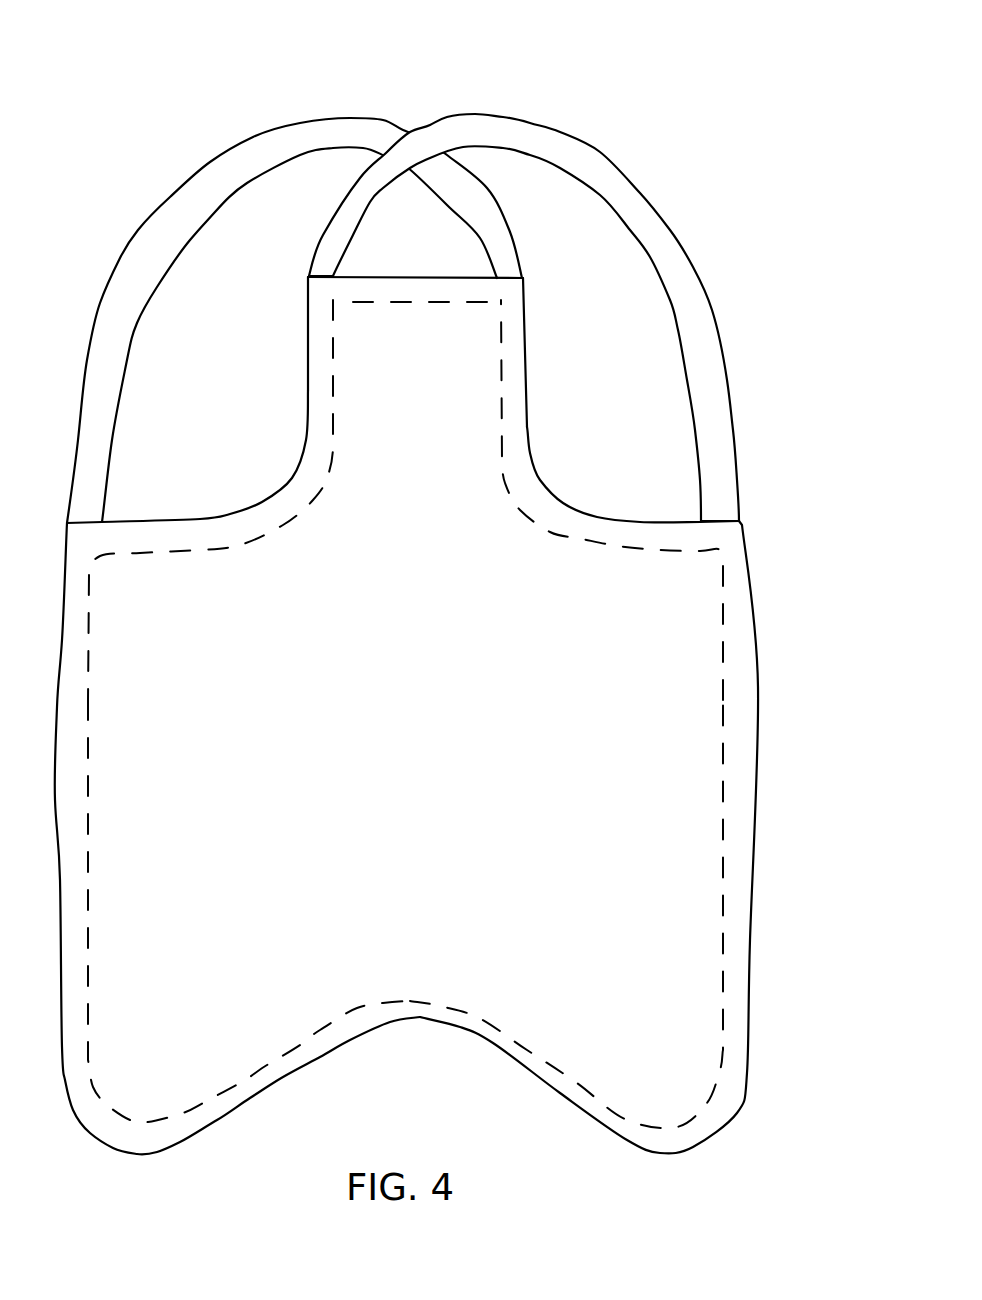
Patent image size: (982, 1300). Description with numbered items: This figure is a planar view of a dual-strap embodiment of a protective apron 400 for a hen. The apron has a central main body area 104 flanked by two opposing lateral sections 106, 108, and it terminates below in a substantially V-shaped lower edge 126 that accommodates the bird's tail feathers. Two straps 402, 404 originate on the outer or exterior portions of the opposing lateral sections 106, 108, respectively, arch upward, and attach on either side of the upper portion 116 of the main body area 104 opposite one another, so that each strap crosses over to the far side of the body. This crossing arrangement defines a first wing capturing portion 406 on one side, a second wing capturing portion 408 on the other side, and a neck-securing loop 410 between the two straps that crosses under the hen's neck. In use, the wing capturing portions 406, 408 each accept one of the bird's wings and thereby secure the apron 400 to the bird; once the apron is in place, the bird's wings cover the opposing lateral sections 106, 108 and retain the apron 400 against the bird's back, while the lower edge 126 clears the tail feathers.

The apron 400 is at (498, 88).
The strap 402 is at (233, 183).
The strap 404 is at (620, 197).
The first wing capturing portion 406 is at (227, 423).
The second wing capturing portion 408 is at (633, 412).
The neck-securing loop 410 is at (450, 253).
The upper portion 116 is at (467, 272).
The main body area 104 is at (447, 427).
The lateral section 106 is at (213, 772).
The lateral section 108 is at (658, 769).
The lower edge 126 is at (490, 1043).